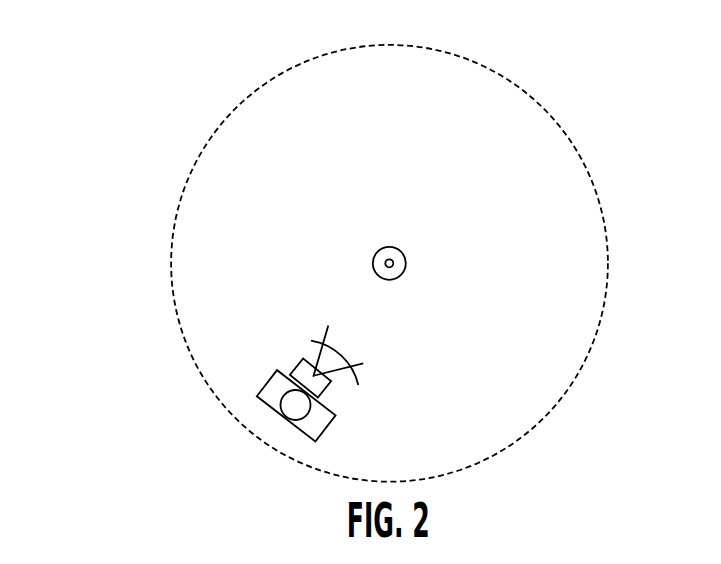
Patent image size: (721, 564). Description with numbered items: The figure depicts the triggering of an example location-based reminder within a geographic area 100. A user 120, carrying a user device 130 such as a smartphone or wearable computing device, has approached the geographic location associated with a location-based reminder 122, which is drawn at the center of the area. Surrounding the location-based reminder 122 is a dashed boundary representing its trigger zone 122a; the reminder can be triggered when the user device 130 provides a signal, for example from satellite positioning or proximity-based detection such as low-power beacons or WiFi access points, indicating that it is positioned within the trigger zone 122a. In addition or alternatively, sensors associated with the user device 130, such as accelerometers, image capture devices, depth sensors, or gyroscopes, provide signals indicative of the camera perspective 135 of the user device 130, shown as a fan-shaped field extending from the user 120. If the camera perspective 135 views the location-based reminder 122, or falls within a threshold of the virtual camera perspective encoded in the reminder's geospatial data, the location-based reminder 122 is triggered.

The geographic area 100 is at (107, 123).
The trigger zone 122a is at (592, 182).
The location-based reminder 122 is at (406, 258).
The user 120 is at (318, 422).
The user device 130 is at (328, 380).
The camera perspective 135 is at (314, 341).